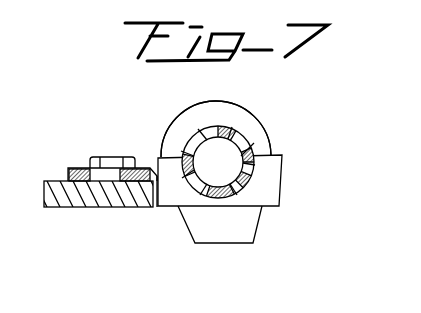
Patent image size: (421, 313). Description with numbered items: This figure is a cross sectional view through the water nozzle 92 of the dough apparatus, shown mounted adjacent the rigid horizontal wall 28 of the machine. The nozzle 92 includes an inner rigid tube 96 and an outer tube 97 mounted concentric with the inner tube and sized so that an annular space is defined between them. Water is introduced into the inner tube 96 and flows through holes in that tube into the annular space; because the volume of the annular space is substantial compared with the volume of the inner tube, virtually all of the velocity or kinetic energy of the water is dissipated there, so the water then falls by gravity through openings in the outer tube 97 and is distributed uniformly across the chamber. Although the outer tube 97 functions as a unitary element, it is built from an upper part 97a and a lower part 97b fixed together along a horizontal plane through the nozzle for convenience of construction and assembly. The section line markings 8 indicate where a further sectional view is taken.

The section line 8- 8 is at (218, 72).
The rigid horizontal wall 28 is at (77, 204).
The nozzle 92 is at (297, 160).
The inner rigid tube 96 is at (280, 184).
The outer tube 97 is at (271, 132).
The upper part 97a is at (178, 121).
The lower part 97b is at (193, 225).